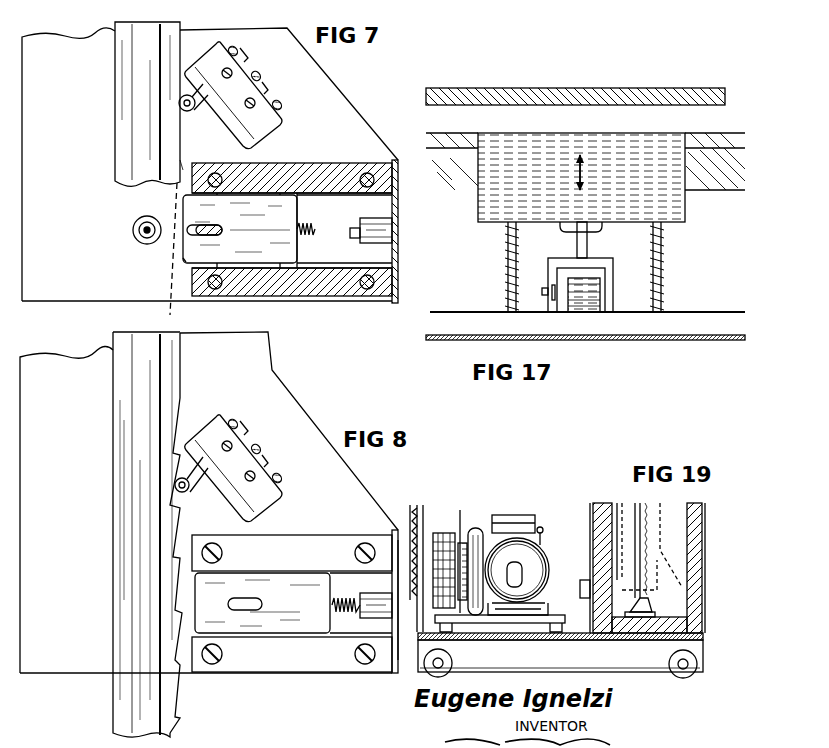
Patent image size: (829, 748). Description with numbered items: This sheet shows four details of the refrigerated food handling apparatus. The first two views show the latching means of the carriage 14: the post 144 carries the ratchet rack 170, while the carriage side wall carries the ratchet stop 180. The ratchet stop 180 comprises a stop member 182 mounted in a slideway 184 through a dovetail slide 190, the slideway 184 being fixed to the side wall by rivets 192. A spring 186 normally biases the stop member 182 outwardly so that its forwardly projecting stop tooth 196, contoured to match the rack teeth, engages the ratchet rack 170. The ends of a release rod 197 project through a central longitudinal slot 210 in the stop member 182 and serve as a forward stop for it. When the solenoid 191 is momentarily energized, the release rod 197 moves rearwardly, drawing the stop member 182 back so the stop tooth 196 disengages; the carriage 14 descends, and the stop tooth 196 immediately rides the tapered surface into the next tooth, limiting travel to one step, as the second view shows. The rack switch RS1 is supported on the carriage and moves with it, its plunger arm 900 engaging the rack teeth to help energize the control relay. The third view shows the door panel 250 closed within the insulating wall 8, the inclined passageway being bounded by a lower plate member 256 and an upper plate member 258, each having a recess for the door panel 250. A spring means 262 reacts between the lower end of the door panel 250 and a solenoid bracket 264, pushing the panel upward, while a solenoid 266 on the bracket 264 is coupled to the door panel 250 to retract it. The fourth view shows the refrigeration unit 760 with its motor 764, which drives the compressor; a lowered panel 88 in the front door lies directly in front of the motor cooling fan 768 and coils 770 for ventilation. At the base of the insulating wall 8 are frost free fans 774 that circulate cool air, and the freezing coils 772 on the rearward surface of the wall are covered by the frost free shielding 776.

In FIG. 7, the carriage 14 is at (118, 43).
In FIG. 8, the post 144 is at (115, 555).
In FIG. 7, the rack switch RS1 is at (254, 77).
In FIG. 8, the rack switch RS1 is at (229, 461).
In FIG. 7, the plunger arm 900 is at (188, 113).
In FIG. 7, the ratchet rack 170 is at (184, 163).
In FIG. 8, the ratchet rack 170 is at (177, 450).
In FIG. 7, the ratchet stop 180 is at (307, 206).
In FIG. 7, the stop member 182 is at (287, 230).
In FIG. 8, the stop member 182 is at (293, 603).
In FIG. 7, the slideway 184 is at (324, 172).
In FIG. 8, the slideway 184 is at (302, 541).
In FIG. 8, the spring 186 is at (343, 621).
In FIG. 7, the dovetail slide 190 is at (251, 192).
In FIG. 7, the solenoid 191 is at (386, 230).
In FIG. 8, the solenoid 191 is at (378, 595).
In FIG. 7, the rivets 192 is at (373, 181).
In FIG. 7, the stop tooth 196 is at (185, 260).
In FIG. 8, the stop tooth 196 is at (187, 626).
In FIG. 7, the release rod 197 is at (208, 225).
In FIG. 7, the slot 210 is at (219, 226).
In FIG. 8, the lowered panel 88 is at (408, 600).
In FIG. 19, the lowered panel 88 is at (412, 568).
In FIG. 17, the door panel 250 is at (680, 205).
In FIG. 17, the lower plate member 256 is at (477, 178).
In FIG. 17, the upper plate member 258 is at (489, 88).
In FIG. 17, the spring means 262 is at (505, 284).
In FIG. 17, the solenoid bracket 264 is at (609, 260).
In FIG. 17, the solenoid 266 is at (598, 303).
In FIG. 19, the insulating wall 8 is at (599, 503).
In FIG. 19, the refrigeration unit 760 is at (552, 552).
In FIG. 19, the motor 764 is at (535, 516).
In FIG. 19, the motor cooling fan 768 is at (470, 598).
In FIG. 19, the coils 770 is at (437, 533).
In FIG. 19, the freezing coils 772 is at (613, 556).
In FIG. 19, the frost free fans 774 is at (577, 590).
In FIG. 19, the frost free shielding 776 is at (613, 558).